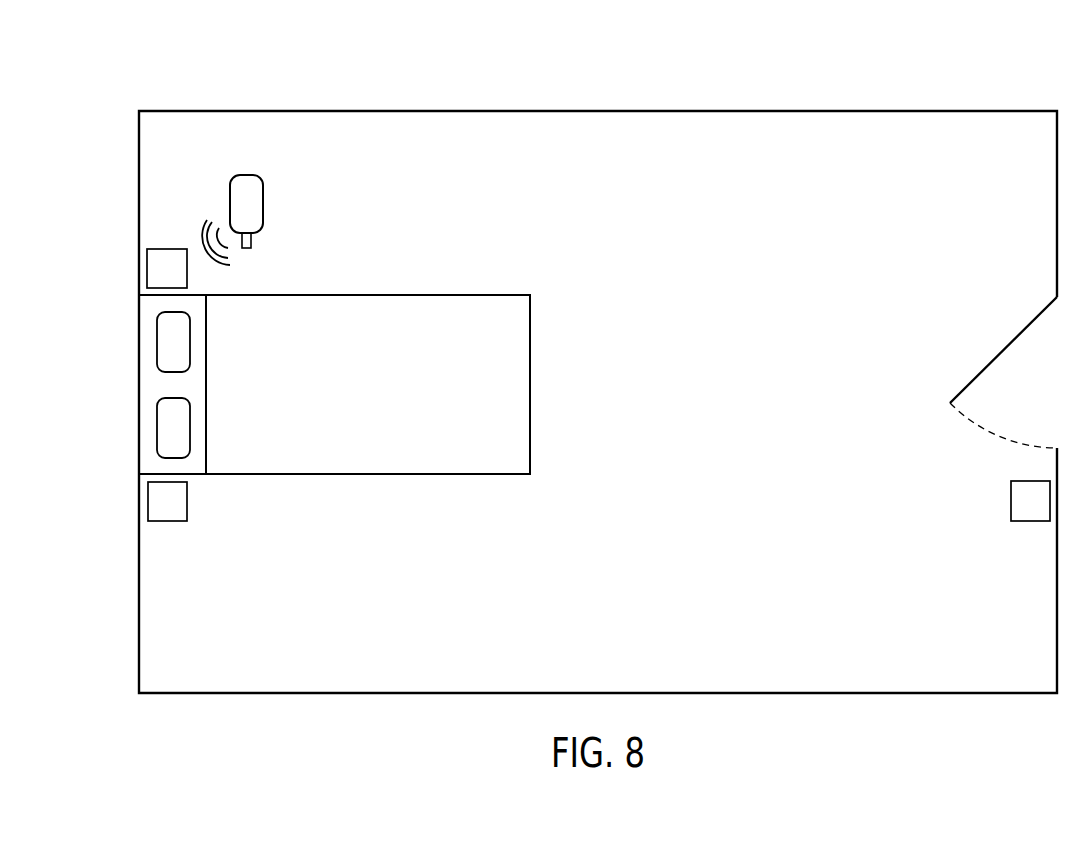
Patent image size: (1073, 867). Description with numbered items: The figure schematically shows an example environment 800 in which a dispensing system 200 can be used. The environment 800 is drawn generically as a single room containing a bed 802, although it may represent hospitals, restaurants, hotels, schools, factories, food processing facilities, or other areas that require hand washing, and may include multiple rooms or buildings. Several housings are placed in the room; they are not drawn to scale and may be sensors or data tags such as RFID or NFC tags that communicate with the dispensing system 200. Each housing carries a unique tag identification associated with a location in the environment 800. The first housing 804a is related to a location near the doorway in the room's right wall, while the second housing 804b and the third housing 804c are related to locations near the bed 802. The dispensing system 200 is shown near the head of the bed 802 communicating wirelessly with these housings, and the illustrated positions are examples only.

The environment 800 is at (139, 73).
The bed 802 is at (440, 295).
The dispensing system 200 is at (263, 203).
The first housing 804a is at (1011, 500).
The second housing 804b is at (147, 268).
The third housing 804c is at (187, 500).